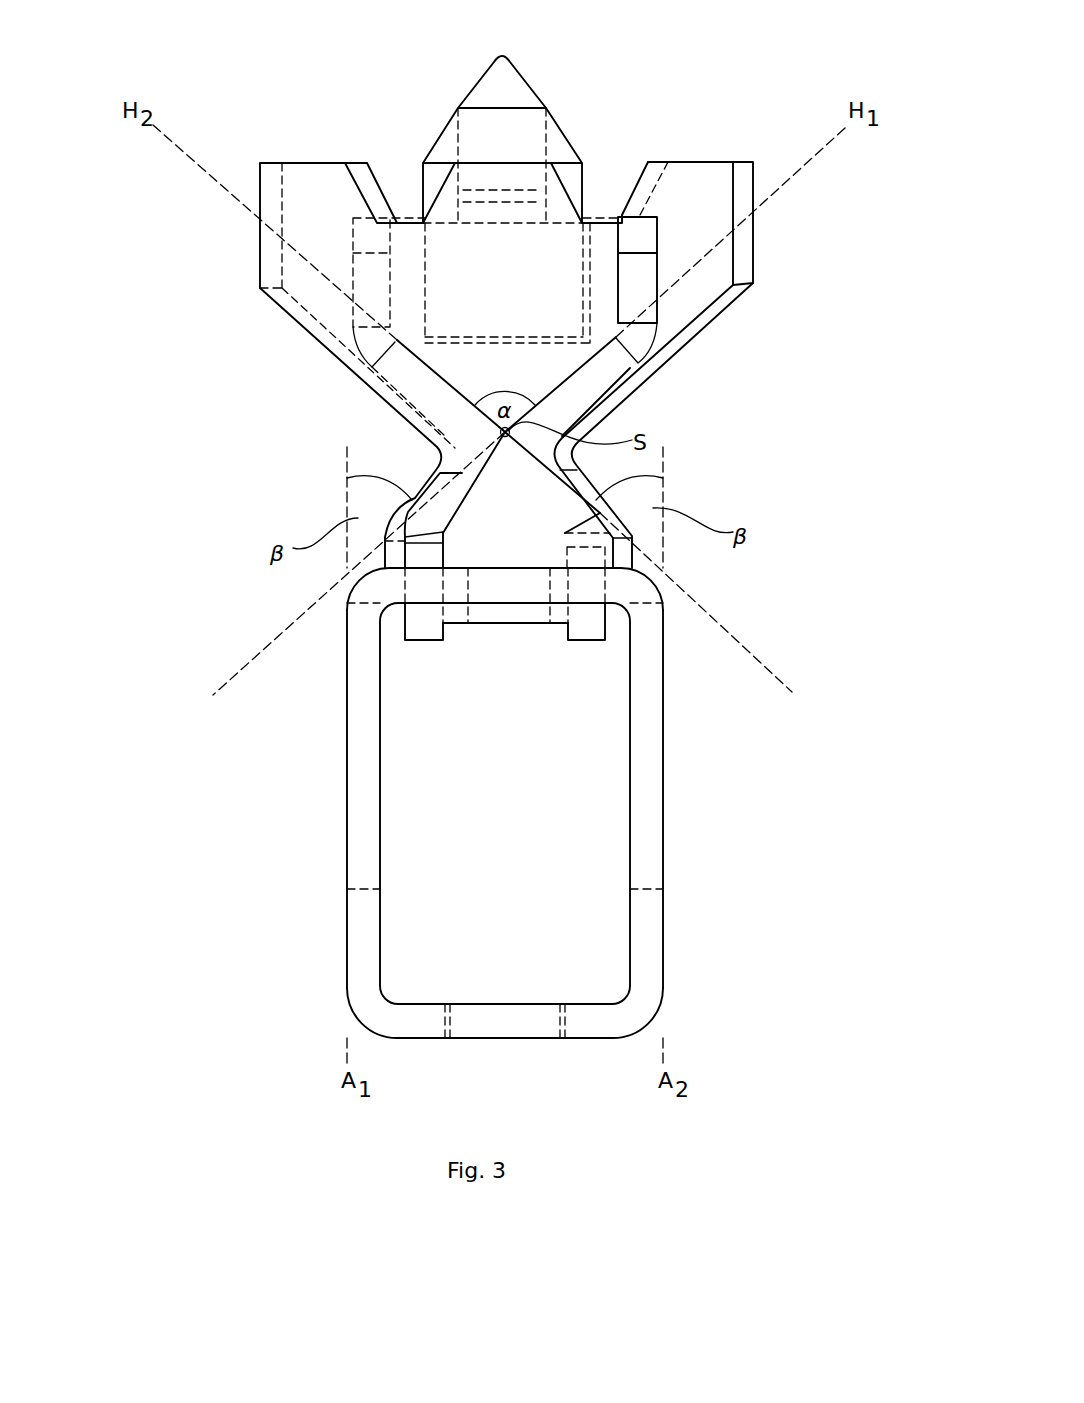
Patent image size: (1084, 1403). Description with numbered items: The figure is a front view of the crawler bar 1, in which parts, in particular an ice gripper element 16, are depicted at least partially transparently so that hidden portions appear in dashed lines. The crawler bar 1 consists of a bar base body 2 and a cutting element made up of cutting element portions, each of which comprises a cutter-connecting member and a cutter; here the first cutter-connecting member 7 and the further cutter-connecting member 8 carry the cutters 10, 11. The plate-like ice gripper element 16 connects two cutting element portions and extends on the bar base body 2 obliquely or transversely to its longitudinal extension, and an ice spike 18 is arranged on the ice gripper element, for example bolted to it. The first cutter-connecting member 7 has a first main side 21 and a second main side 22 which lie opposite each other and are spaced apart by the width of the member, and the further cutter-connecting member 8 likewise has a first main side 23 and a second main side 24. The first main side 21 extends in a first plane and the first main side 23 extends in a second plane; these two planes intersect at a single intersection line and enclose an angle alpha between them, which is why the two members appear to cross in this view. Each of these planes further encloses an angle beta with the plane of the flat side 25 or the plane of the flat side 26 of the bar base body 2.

The crawler bar 1 is at (797, 585).
The bar base body 2 is at (502, 803).
The first cutter-connecting member 7 is at (612, 368).
The further cutter-connecting member 8 is at (435, 392).
The cutter 10 is at (650, 308).
The cutter 11 is at (358, 315).
The ice gripper element 16 is at (747, 230).
The ice spike 18 is at (560, 128).
The first main side 21 is at (607, 338).
The second main side 22 is at (478, 520).
The first main side 23 is at (405, 338).
The second main side 24 is at (531, 520).
The flat side 25 is at (665, 672).
The flat side 26 is at (347, 910).